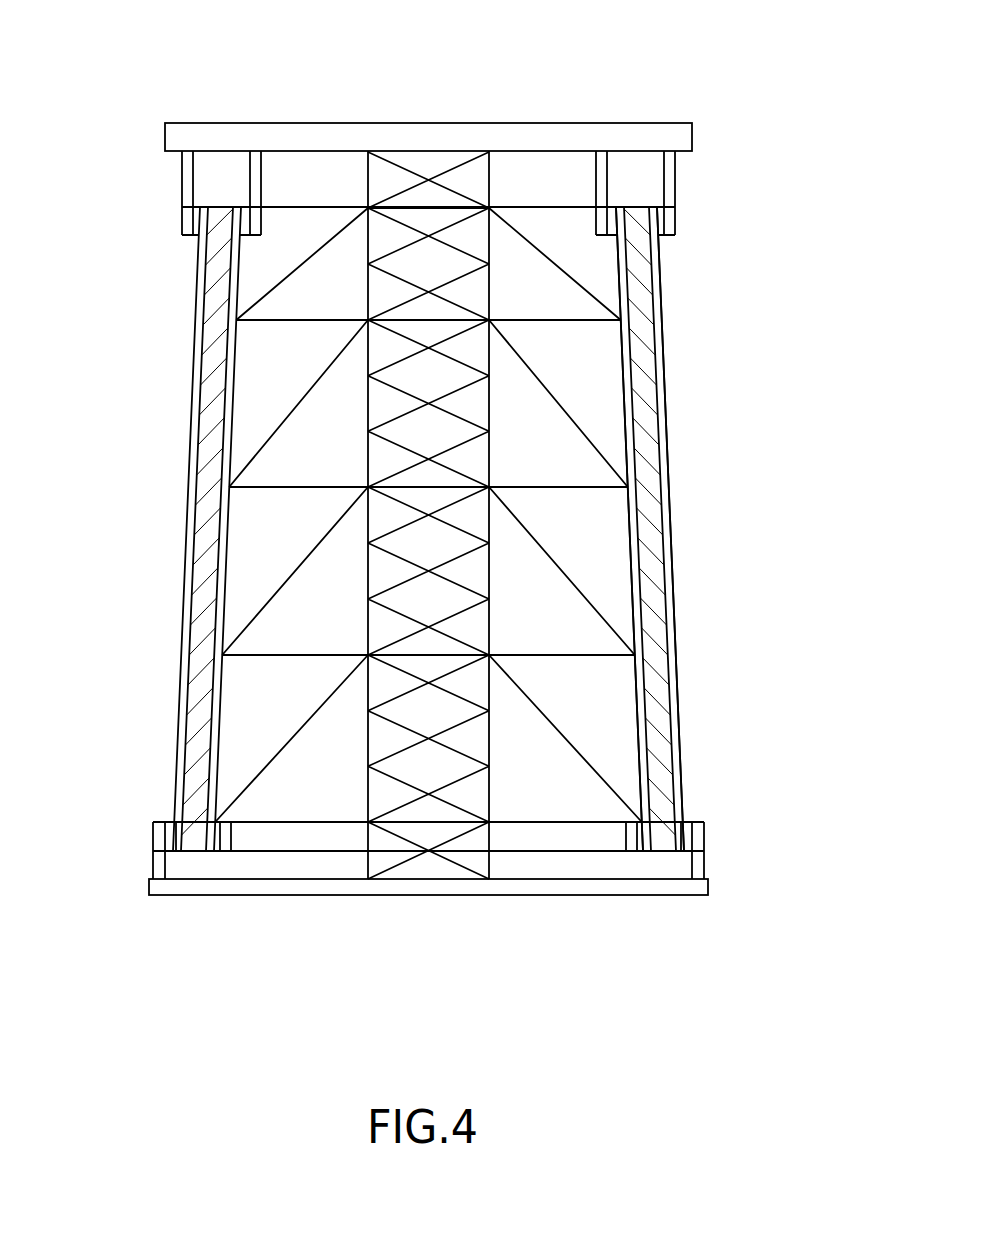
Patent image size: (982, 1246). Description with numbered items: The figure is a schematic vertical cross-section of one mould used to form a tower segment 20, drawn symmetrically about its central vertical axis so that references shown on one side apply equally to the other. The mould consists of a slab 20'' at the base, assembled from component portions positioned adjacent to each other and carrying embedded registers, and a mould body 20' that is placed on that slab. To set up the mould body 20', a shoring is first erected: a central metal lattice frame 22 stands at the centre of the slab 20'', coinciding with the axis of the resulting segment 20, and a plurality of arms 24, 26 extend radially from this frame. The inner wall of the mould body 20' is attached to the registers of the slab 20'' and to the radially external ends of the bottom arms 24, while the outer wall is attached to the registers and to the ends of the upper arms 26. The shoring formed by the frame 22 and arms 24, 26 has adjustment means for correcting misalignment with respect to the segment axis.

The segment 20 is at (729, 529).
The mould body 20' is at (436, 529).
The slab 20'' is at (463, 896).
The central metal lattice frame 22 is at (355, 293).
The bottom arms 24 is at (592, 288).
The upper arms 26 is at (552, 205).